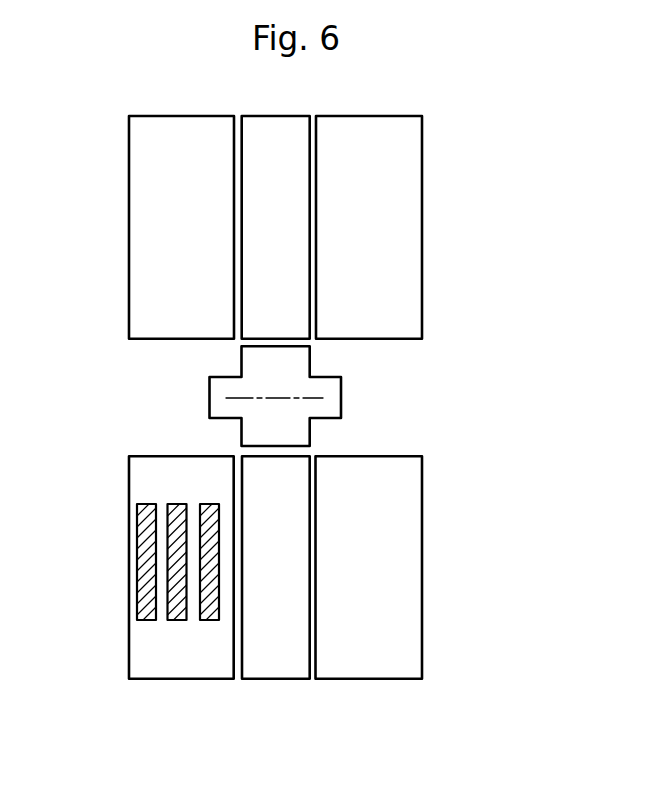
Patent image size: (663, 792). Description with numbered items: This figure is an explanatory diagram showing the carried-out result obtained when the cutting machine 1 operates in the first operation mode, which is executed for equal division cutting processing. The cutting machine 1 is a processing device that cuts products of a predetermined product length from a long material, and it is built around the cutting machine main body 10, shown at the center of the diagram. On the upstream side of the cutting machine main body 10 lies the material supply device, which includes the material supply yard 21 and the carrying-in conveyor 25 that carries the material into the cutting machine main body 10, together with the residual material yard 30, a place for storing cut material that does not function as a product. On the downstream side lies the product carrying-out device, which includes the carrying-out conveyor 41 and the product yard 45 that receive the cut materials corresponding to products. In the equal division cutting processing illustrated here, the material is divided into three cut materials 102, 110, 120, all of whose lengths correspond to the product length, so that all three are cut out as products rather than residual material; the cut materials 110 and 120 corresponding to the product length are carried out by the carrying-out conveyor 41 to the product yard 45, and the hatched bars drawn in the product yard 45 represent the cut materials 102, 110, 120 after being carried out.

The cutting machine 1 is at (465, 338).
The cutting machine main body 10 is at (333, 400).
The material supply yard 21 is at (410, 260).
The carrying-in conveyor 25 is at (295, 163).
The residual material yard 30 is at (145, 261).
The carrying-out conveyor 41 is at (283, 662).
The product yard 45 is at (135, 651).
The cut material 102 is at (202, 525).
The cut material 110 is at (136, 606).
The cut material 120 is at (176, 565).